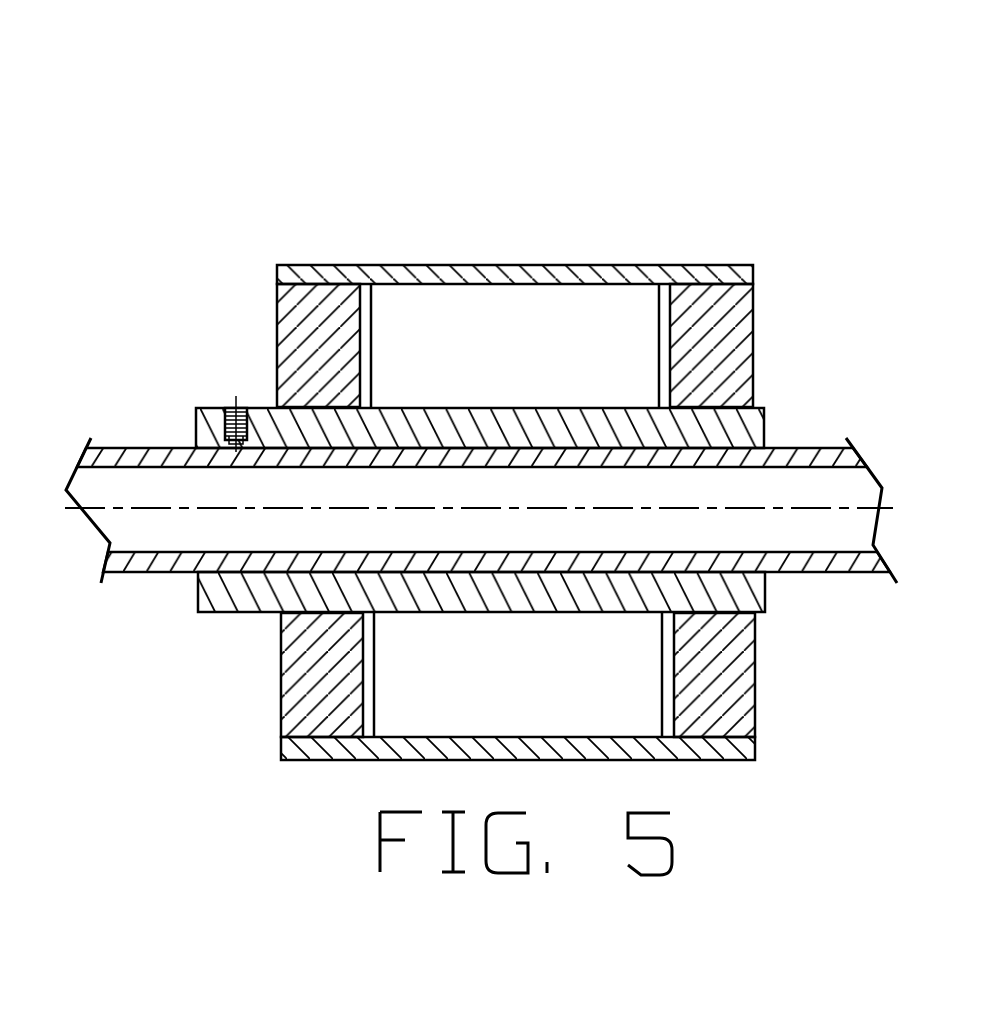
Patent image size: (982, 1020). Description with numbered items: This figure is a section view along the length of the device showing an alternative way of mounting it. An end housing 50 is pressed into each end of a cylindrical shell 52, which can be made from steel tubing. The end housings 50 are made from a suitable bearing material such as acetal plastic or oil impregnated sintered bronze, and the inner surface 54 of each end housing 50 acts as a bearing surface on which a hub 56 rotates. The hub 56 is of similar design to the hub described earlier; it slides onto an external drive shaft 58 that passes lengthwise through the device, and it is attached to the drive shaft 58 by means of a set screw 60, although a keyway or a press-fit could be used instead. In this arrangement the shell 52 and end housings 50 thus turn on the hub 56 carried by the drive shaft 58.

The end housing 50 is at (519, 476).
The cylindrical shell 52 is at (567, 162).
The inner surface 54 is at (513, 385).
The hub 56 is at (554, 501).
The external drive shaft 58 is at (513, 560).
The set screw 60 is at (176, 407).